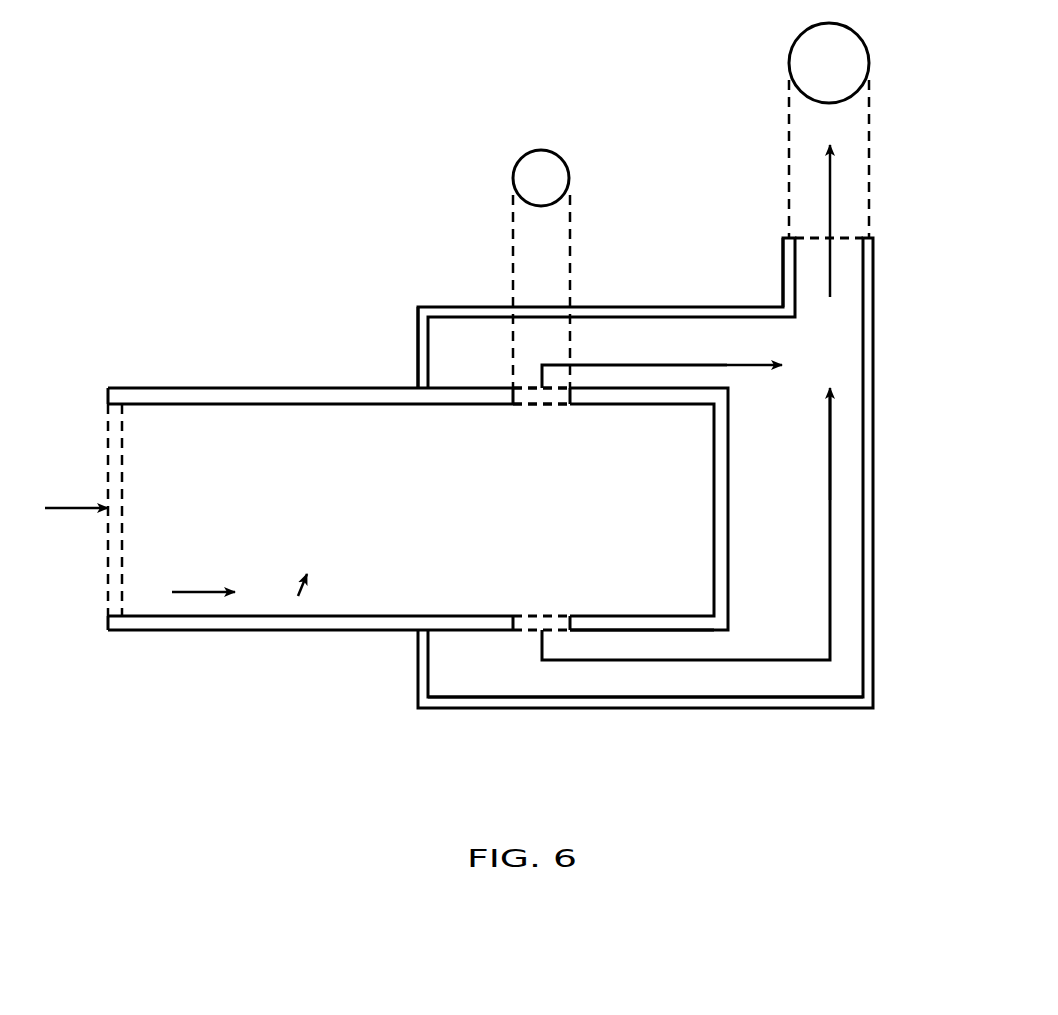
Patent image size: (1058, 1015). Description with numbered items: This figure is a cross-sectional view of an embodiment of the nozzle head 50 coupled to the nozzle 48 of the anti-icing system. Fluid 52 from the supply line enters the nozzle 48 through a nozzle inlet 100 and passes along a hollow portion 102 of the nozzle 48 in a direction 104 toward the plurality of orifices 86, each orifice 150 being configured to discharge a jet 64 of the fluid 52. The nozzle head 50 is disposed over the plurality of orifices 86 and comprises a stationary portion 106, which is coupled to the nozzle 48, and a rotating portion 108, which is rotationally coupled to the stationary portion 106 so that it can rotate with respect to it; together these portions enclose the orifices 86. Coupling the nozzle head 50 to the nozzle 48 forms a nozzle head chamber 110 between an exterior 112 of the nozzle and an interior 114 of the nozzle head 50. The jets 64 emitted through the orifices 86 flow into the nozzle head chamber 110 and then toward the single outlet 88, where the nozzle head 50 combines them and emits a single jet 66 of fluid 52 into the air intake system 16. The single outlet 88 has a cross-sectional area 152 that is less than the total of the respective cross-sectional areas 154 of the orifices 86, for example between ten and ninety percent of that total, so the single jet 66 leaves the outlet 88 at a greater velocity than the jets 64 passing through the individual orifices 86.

The air intake system 16 is at (362, 163).
The nozzle 48 is at (233, 352).
The nozzle head 50 is at (762, 717).
The fluid 52 is at (60, 505).
The jet of fluid 64 is at (637, 363).
The single jet of fluid 66 is at (833, 197).
The plurality of orifices 86 is at (568, 162).
The single outlet 88 is at (790, 50).
The nozzle inlet 100 is at (108, 406).
The hollow portion 102 is at (298, 600).
The airflow direction 104 is at (195, 595).
The stationary portion 106 is at (398, 352).
The rotating portion 108 is at (767, 290).
The nozzle head chamber 110 is at (835, 478).
The exterior of the nozzle 112 is at (643, 634).
The interior of the nozzle head 114 is at (707, 699).
The orifice 150 is at (525, 405).
The single outlet cross-sectional area 152 is at (833, 65).
The respective cross-sectional area 154 is at (537, 185).